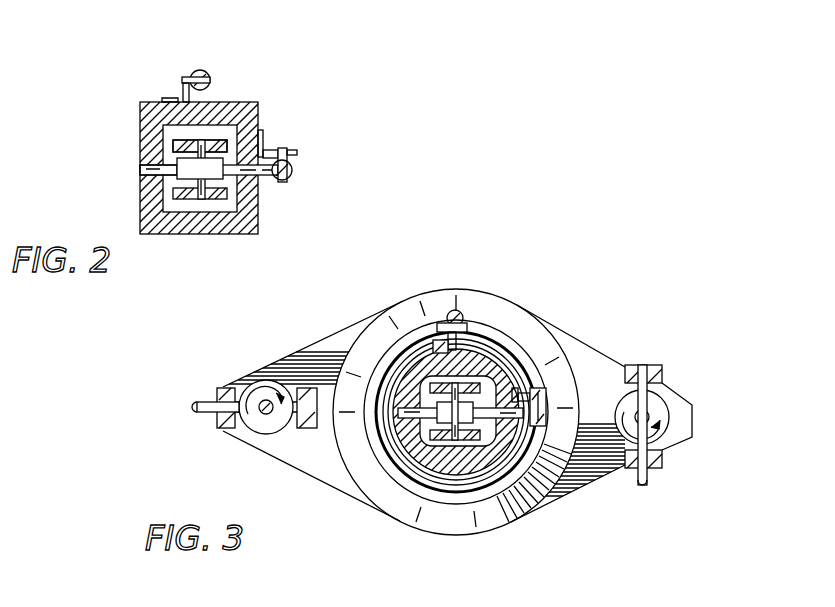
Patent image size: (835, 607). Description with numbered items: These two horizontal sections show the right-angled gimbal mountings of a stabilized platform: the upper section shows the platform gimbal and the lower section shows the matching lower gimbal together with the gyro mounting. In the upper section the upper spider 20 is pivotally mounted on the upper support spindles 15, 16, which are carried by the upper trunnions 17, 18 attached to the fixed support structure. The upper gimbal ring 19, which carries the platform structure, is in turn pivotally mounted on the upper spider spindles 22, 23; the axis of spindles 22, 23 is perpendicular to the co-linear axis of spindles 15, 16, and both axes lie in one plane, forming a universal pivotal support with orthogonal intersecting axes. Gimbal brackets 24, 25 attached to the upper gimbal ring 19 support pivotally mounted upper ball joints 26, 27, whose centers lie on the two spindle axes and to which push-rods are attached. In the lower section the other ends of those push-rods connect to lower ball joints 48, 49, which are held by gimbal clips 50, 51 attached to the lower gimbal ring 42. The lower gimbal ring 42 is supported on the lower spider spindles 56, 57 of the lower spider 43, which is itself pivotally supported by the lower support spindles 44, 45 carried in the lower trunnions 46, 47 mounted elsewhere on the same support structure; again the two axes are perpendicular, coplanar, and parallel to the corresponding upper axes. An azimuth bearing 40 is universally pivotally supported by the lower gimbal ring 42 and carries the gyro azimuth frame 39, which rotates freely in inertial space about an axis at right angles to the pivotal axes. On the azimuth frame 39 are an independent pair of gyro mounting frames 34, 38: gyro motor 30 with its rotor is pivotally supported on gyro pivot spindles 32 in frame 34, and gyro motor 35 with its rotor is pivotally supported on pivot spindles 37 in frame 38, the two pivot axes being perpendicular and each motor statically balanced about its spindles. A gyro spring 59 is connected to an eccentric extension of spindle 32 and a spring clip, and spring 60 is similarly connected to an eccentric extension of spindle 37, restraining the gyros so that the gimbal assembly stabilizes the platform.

In FIG. 2, the upper support spindle 15 is at (200, 200).
In FIG. 2, the upper support spindle 16 is at (195, 140).
In FIG. 2, the upper trunnion 17 is at (221, 142).
In FIG. 2, the upper trunnion 18 is at (218, 199).
In FIG. 2, the upper gimbal ring 19 is at (259, 108).
In FIG. 2, the upper spider 20 is at (182, 172).
In FIG. 2, the upper spider spindle 22 is at (262, 178).
In FIG. 2, the upper spider spindle 23 is at (150, 168).
In FIG. 2, the gimbal bracket 24 is at (268, 150).
In FIG. 2, the gimbal bracket 25 is at (185, 96).
In FIG. 2, the upper ball joint 26 is at (297, 172).
In FIG. 2, the upper ball joint 27 is at (206, 72).
In FIG. 3, the gyro motor 30 is at (266, 380).
In FIG. 3, the gyro pivot spindle 32 is at (218, 388).
In FIG. 3, the gyro mounting frame 34 is at (302, 428).
In FIG. 3, the gyro motor 35 is at (665, 408).
In FIG. 3, the pivot spindle 37 is at (642, 365).
In FIG. 3, the gyro mounting frame 38 is at (663, 373).
In FIG. 3, the gyro azimuth frame 39 is at (255, 448).
In FIG. 3, the azimuth bearing 40 is at (356, 482).
In FIG. 3, the lower gimbal ring 42 is at (480, 365).
In FIG. 3, the lower spider 43 is at (386, 376).
In FIG. 3, the lower support spindle 44 is at (510, 375).
In FIG. 3, the lower support spindle 45 is at (454, 440).
In FIG. 3, the lower trunnion 46 is at (436, 345).
In FIG. 3, the lower trunnion 47 is at (432, 440).
In FIG. 3, the lower ball joint 48 is at (548, 425).
In FIG. 3, the lower ball joint 49 is at (460, 323).
In FIG. 3, the gimbal clip 50 is at (566, 378).
In FIG. 3, the gimbal clip 51 is at (452, 316).
In FIG. 3, the lower spider spindle 56 is at (476, 442).
In FIG. 3, the lower spider spindle 57 is at (400, 410).
In FIG. 3, the gyro spring 59 is at (199, 407).
In FIG. 3, the spring 60 is at (648, 485).